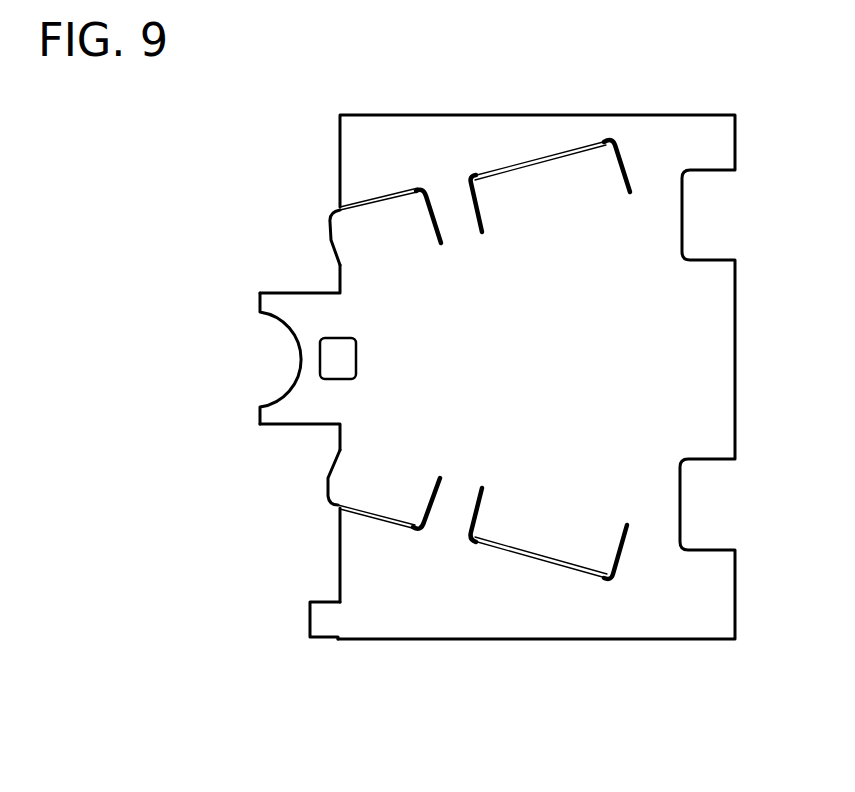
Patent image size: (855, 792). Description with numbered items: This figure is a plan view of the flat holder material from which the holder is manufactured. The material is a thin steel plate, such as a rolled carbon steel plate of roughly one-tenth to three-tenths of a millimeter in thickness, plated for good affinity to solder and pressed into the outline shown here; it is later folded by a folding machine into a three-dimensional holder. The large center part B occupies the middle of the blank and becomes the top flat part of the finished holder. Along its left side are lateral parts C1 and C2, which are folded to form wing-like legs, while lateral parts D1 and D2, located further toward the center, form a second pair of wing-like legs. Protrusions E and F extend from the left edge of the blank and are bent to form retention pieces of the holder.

The center part B is at (497, 377).
The protrusion E is at (318, 320).
The protrusion F is at (322, 617).
The lateral part C1 is at (375, 491).
The lateral part C2 is at (365, 224).
The lateral part D1 is at (542, 540).
The lateral part D2 is at (518, 182).